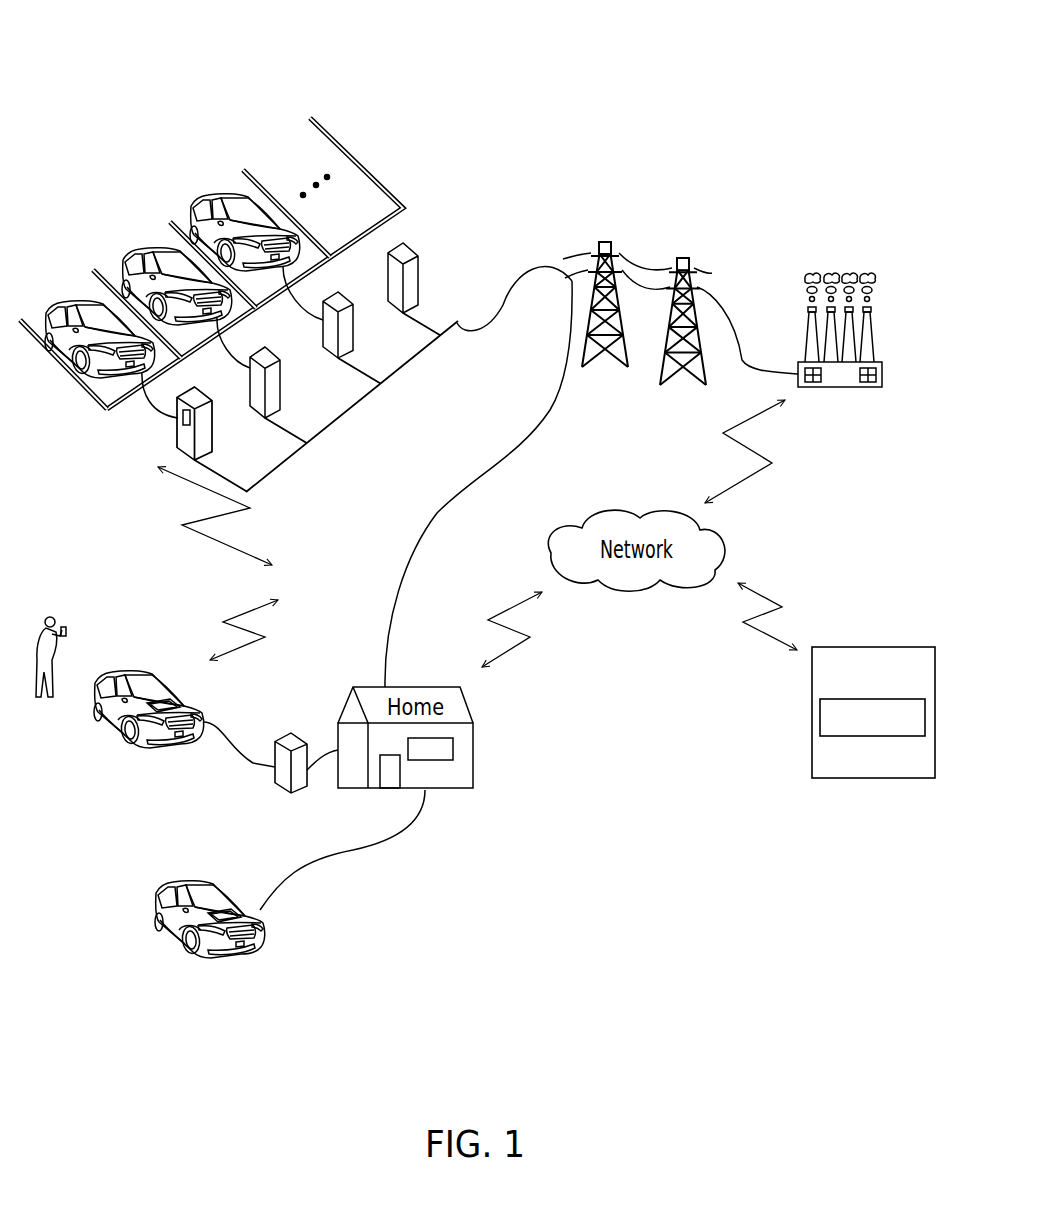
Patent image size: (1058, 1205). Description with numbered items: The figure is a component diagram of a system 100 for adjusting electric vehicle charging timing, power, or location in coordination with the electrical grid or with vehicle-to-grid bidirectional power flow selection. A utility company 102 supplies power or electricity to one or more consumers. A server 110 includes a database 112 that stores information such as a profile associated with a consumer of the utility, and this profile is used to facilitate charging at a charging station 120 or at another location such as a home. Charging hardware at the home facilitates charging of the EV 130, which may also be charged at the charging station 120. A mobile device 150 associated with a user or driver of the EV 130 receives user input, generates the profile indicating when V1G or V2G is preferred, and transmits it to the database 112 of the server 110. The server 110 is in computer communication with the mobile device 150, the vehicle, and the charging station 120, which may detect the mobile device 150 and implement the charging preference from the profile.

The system 100 is at (139, 50).
The utility company 102 is at (882, 374).
The server 110 is at (862, 647).
The database 112 is at (820, 722).
The charging station 120 is at (177, 428).
The electric vehicle (EV) 130 is at (72, 300).
The mobile device 150 is at (47, 617).